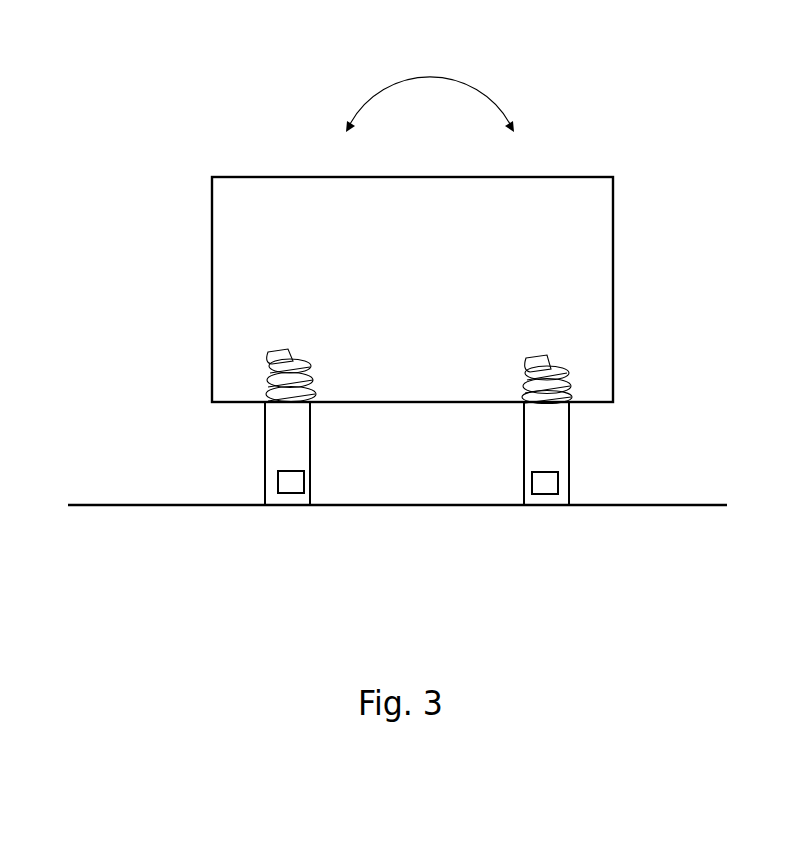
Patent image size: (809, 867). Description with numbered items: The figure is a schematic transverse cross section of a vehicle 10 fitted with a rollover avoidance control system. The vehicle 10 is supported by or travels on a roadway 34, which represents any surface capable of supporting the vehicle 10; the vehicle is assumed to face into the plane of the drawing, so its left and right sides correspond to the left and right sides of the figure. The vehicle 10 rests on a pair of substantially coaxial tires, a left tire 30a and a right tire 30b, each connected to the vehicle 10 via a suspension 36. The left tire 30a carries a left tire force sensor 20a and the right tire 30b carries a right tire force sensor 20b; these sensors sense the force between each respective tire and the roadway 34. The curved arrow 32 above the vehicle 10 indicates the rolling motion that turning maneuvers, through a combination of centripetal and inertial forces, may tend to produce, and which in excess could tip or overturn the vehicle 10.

The vehicle 10 is at (613, 228).
The left tire force sensor 20a is at (310, 452).
The right tire force sensor 20b is at (540, 487).
The left tire 30a is at (263, 453).
The right tire 30b is at (570, 465).
The arrow 32 is at (488, 93).
The roadway 34 is at (695, 503).
The suspension 36 is at (290, 352).